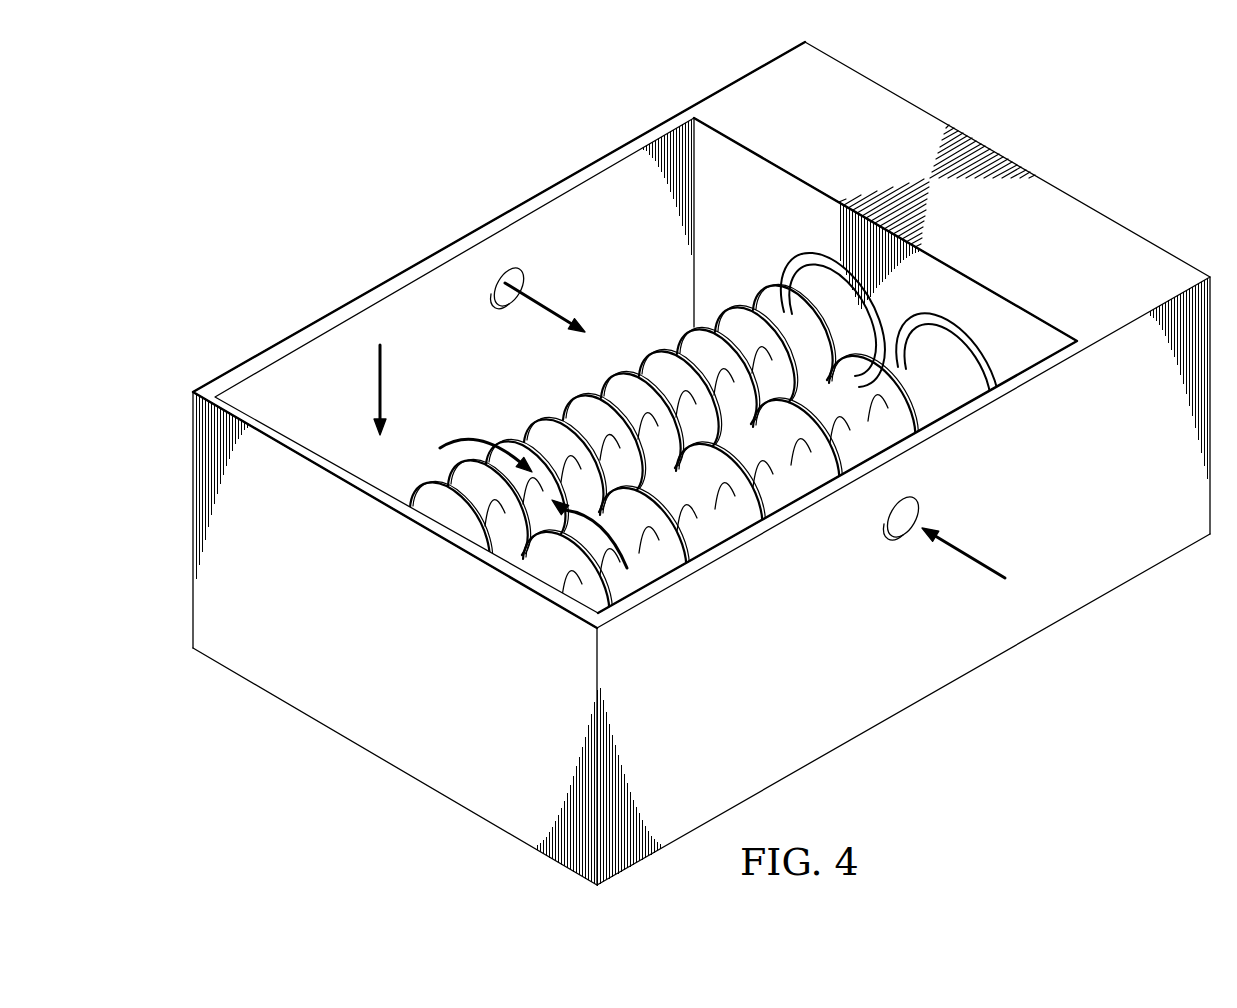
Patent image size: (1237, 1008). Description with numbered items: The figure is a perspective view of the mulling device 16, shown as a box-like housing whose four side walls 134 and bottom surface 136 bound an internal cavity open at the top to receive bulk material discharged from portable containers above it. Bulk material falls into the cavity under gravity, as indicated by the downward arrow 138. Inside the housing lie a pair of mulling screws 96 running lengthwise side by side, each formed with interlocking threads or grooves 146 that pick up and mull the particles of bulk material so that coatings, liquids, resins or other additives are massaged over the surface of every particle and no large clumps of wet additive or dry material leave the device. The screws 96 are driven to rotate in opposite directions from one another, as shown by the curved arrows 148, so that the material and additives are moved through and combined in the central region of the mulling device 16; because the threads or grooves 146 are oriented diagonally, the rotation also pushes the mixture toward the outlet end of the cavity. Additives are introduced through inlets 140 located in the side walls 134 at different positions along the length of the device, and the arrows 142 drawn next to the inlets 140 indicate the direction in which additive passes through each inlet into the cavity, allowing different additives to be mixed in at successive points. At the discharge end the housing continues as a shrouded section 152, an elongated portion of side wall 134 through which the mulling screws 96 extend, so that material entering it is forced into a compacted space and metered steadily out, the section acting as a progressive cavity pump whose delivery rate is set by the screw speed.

The mulling device 16 is at (395, 168).
The mulling screws 96 is at (737, 299).
The side walls 134 is at (387, 280).
The bottom surface 136 is at (345, 737).
The arrow 138 is at (379, 372).
The inlets 140 is at (503, 304).
The outlet flow direction 142 is at (543, 301).
The threads or grooves 146 is at (663, 352).
The arrows 148 is at (473, 437).
The shrouded section 152 is at (887, 109).